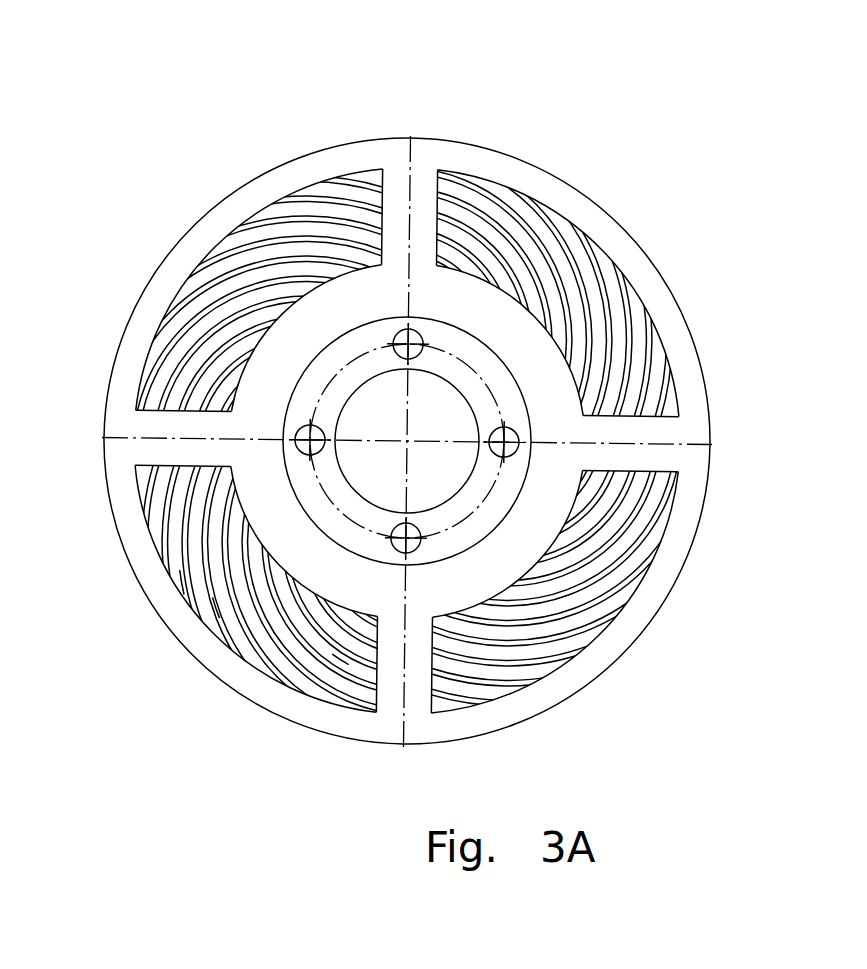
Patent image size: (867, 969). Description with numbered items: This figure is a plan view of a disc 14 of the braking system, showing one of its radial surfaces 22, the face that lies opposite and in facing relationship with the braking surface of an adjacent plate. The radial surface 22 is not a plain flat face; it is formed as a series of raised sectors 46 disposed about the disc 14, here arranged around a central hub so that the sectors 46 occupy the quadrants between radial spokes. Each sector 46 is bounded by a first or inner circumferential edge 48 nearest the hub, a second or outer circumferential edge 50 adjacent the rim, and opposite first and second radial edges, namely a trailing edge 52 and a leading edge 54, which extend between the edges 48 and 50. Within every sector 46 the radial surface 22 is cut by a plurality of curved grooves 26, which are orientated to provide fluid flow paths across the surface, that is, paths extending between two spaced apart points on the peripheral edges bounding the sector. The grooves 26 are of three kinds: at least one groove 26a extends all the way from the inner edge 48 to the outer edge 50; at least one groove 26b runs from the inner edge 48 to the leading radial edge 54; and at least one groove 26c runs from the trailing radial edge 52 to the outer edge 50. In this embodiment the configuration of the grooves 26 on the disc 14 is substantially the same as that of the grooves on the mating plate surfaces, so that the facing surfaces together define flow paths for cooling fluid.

The disc 14 is at (440, 440).
The radial surface 22 is at (409, 440).
The grooves 26 is at (463, 212).
The groove 26a is at (218, 610).
The groove 26b is at (343, 660).
The groove 26c is at (183, 585).
The raised sector 46 is at (228, 212).
The inner circumferential edge 48 is at (517, 578).
The outer circumferential edge 50 is at (532, 702).
The trailing radial edge 52 is at (432, 207).
The leading radial edge 54 is at (393, 206).